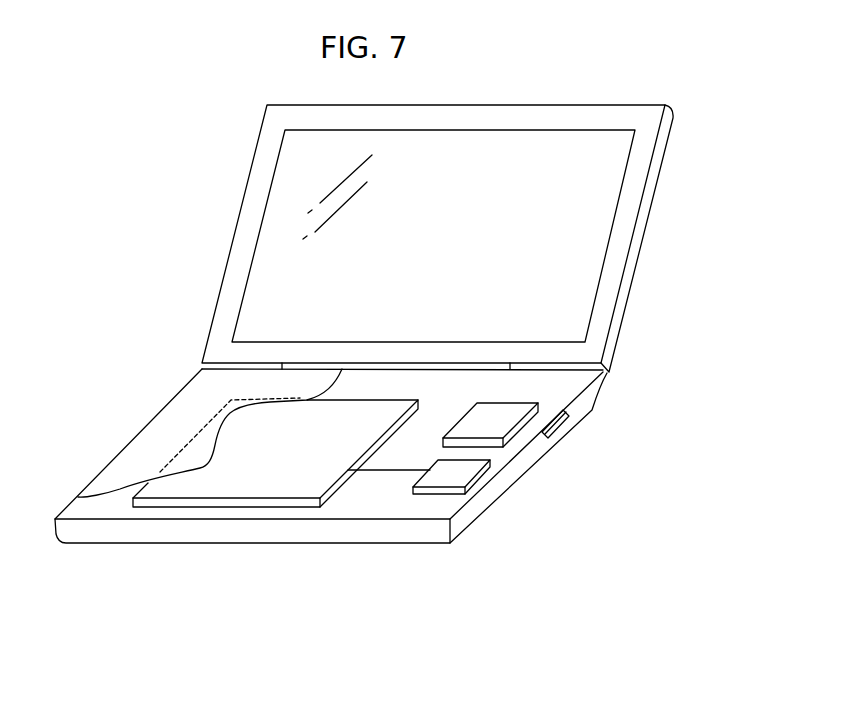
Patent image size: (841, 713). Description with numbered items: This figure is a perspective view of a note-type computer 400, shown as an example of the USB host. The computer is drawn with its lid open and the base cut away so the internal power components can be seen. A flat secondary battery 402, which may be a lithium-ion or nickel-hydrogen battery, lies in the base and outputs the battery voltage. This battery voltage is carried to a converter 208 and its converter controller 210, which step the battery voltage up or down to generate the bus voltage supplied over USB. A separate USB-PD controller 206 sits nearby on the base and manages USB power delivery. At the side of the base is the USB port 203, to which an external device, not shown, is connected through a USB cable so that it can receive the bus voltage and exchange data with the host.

The note-type computer 400 is at (364, 395).
The secondary battery 402 is at (262, 481).
The USB-PD controller 206 is at (505, 412).
The converter 208 is at (521, 489).
The converter controller 210 is at (460, 470).
The USB port 203 is at (560, 427).